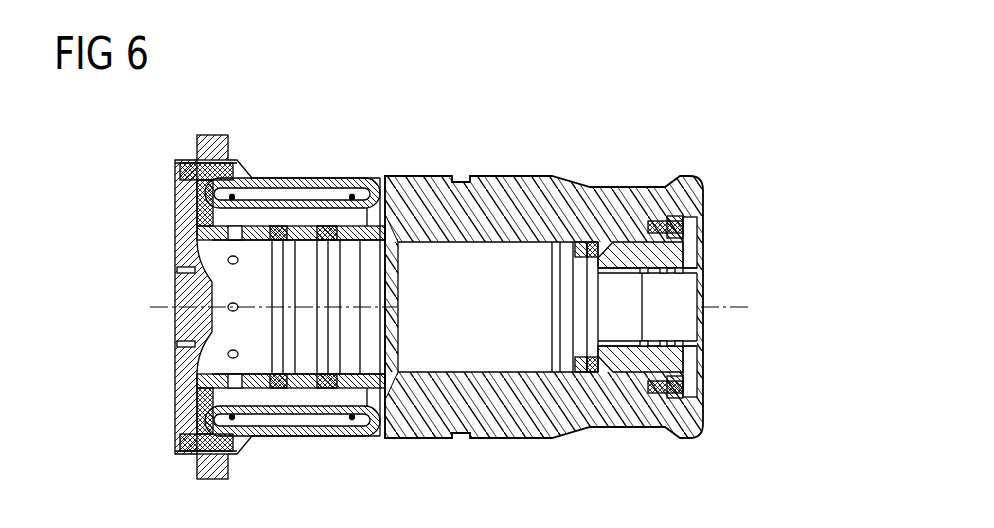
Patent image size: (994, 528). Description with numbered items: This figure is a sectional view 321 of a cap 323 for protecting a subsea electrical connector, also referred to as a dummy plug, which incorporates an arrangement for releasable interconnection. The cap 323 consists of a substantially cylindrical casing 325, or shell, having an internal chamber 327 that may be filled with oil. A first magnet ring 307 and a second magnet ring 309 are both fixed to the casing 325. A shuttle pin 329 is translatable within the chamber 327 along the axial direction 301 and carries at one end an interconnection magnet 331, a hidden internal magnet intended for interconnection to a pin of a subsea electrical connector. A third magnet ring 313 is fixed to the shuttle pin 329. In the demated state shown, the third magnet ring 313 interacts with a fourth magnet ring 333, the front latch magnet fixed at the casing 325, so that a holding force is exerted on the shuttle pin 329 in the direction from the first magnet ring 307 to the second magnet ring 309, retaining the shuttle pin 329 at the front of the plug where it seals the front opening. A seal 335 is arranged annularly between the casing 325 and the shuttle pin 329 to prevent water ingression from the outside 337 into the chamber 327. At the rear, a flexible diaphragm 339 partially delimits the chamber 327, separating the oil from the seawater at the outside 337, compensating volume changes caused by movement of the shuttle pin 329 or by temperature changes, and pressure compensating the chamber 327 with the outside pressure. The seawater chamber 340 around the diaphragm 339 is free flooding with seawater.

The axial direction 301 is at (731, 310).
The first magnet ring 307 is at (290, 387).
The second magnet ring 309 is at (337, 397).
The third magnet ring 313 is at (583, 426).
The sectional view 321 is at (735, 158).
The cap 323 is at (142, 236).
The casing 325 is at (548, 171).
The chamber 327 is at (497, 257).
The shuttle pin 329 is at (733, 292).
The interconnection magnet 331 is at (693, 284).
The fourth magnet ring 333 is at (618, 243).
The seal 335 is at (637, 377).
The outside 337 is at (449, 145).
The diaphragm 339 is at (270, 196).
The seawater chamber 340 is at (318, 196).